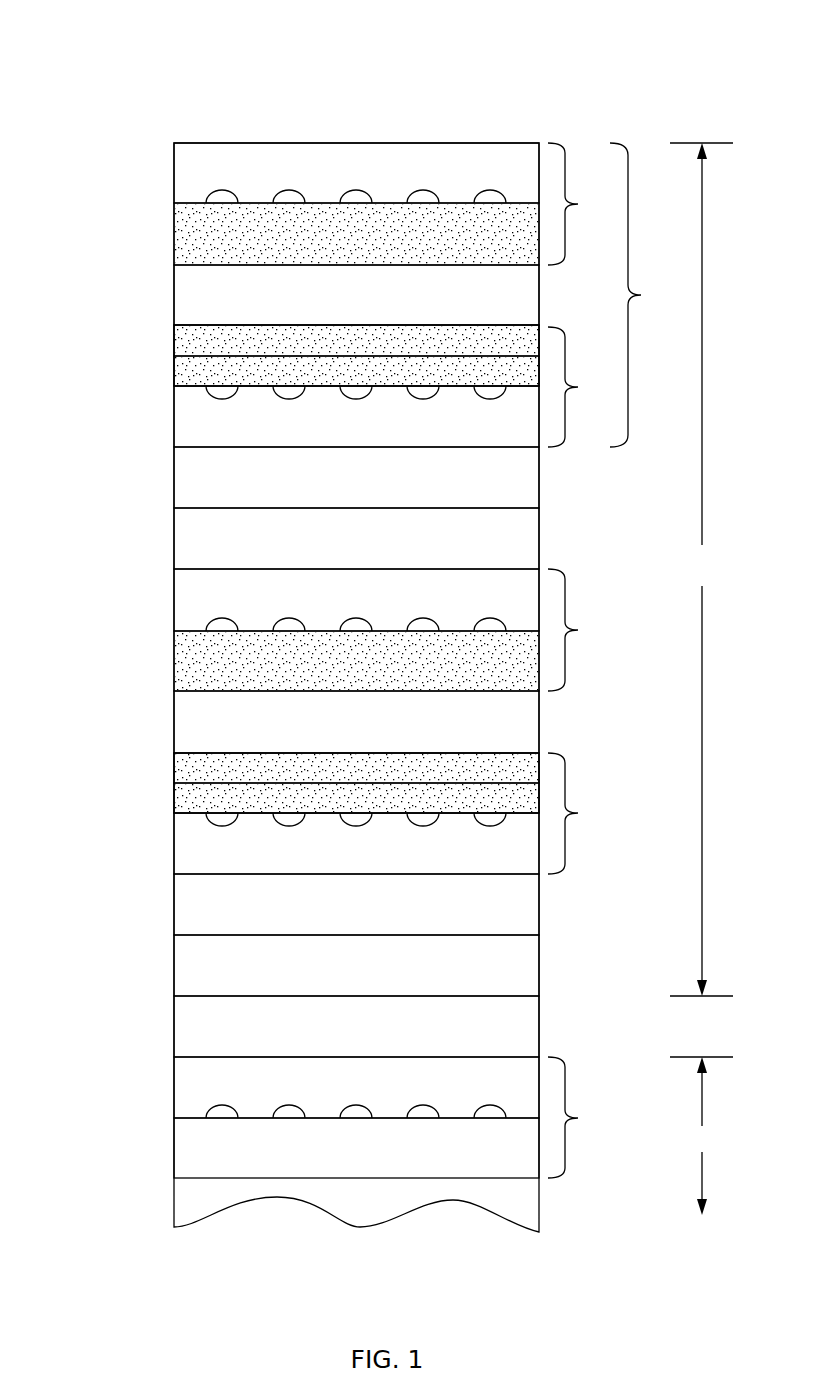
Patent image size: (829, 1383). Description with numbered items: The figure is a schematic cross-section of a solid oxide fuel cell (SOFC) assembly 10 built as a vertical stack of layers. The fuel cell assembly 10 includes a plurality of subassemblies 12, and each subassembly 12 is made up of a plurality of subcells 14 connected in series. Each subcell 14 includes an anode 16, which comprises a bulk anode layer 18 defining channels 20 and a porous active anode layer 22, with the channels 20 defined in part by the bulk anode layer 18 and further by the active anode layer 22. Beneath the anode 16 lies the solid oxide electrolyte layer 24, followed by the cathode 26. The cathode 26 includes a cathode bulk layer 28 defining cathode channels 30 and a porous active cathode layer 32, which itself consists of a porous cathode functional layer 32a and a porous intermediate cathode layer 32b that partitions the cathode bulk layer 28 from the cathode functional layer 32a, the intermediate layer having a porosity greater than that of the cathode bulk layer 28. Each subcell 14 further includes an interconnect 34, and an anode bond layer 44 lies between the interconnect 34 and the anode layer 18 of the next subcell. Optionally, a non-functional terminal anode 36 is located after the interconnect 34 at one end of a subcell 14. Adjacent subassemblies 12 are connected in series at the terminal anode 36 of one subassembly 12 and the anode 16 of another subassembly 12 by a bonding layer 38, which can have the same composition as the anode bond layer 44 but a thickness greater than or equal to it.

The solid oxide fuel cell assembly 10 is at (106, 64).
The subassembly 12 is at (690, 581).
The subcell 14 is at (643, 295).
The anode 16 is at (580, 660).
The bulk anode layer 18 is at (185, 171).
The channels 20 is at (218, 198).
The active anode layer 22 is at (185, 235).
The solid oxide electrolyte layer 24 is at (185, 285).
The cathode 26 is at (580, 600).
The cathode bulk layer 28 is at (185, 427).
The cathode channels 30 is at (218, 399).
The active cathode layer 32 is at (164, 357).
The porous cathode functional layer 32a is at (183, 340).
The porous intermediate cathode layer 32b is at (183, 369).
The interconnect 34 is at (185, 478).
The terminal anode 36 is at (185, 967).
The bonding layer 38 is at (185, 1023).
The anode bond layer 44 is at (185, 538).